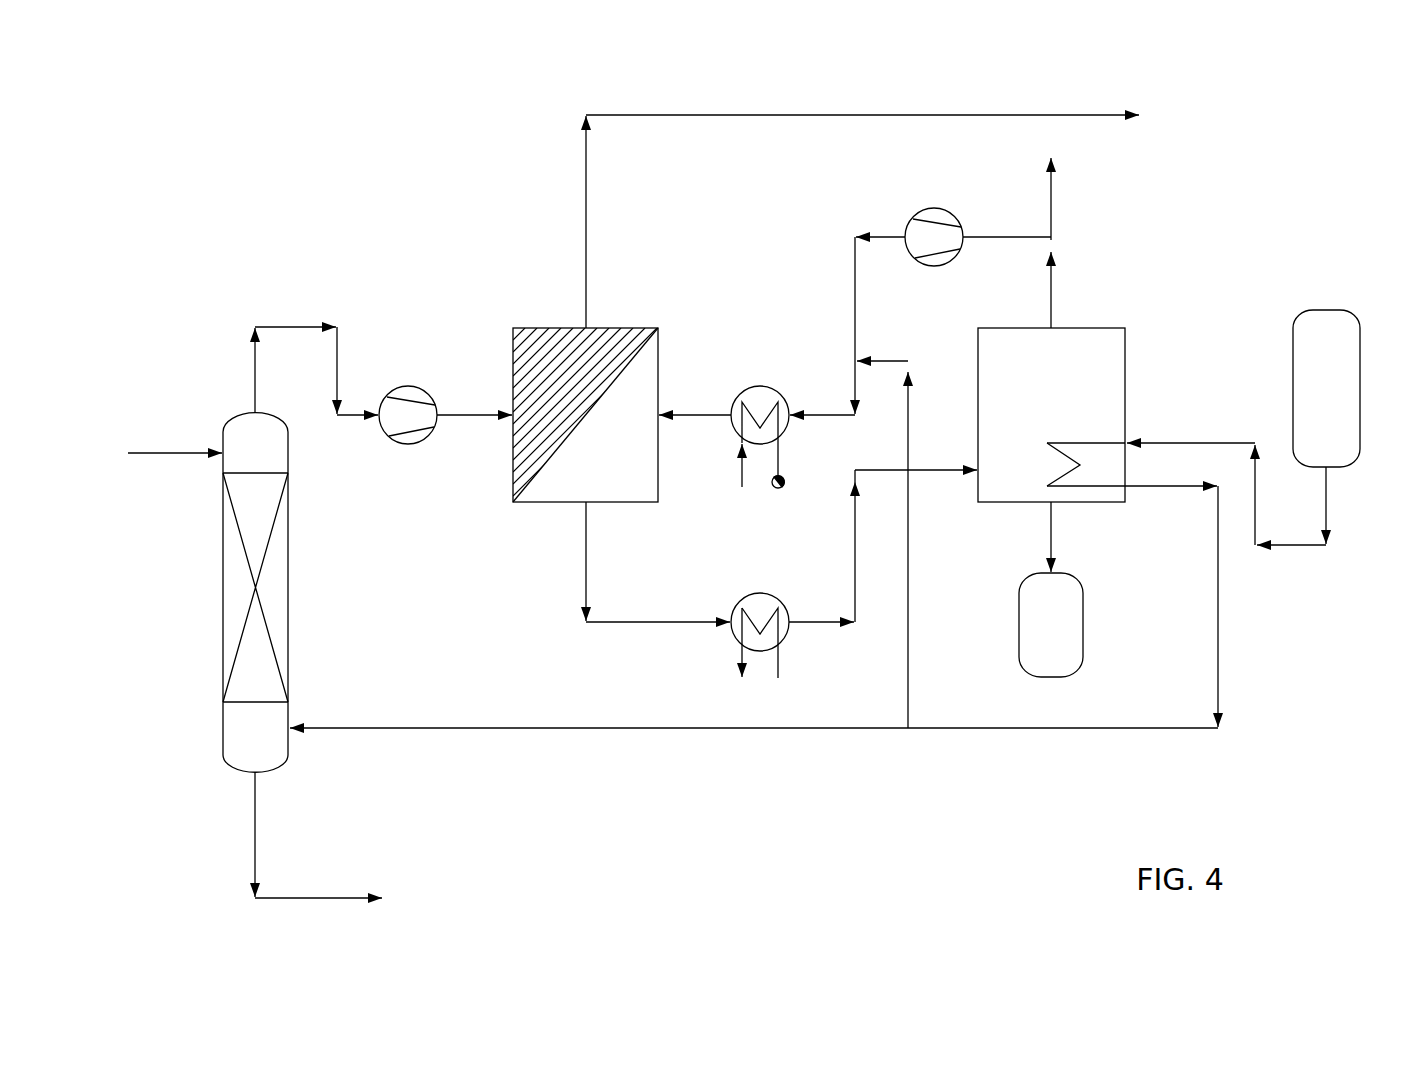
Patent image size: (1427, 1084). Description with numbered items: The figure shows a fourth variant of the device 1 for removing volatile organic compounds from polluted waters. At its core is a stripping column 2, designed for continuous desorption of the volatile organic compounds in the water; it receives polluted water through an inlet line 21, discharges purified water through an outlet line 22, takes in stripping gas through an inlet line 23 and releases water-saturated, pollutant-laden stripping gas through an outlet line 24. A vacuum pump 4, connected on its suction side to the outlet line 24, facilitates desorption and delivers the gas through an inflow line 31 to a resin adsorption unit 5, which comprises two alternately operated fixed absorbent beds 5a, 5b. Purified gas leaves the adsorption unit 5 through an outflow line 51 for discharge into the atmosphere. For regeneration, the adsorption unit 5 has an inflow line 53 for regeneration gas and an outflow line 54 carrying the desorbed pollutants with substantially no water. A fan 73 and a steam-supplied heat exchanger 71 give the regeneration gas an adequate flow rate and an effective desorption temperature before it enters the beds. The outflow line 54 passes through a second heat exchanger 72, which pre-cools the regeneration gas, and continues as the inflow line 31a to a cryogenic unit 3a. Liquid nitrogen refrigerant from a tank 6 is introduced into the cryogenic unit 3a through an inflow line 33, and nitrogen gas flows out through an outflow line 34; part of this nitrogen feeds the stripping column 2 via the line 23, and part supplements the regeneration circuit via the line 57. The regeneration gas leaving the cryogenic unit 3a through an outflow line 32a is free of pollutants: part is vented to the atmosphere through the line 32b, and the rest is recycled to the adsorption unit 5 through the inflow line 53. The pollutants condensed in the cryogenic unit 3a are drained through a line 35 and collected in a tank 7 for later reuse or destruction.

The device for removing volatile organic compounds from polluted waters 1 is at (140, 236).
The stripping column 2 is at (296, 540).
The inlet line for water to be purified 21 is at (175, 446).
The outlet line for purified water 22 is at (343, 890).
The inlet line for stripping gas 23 is at (343, 718).
The outlet line for stripping gas 24 is at (291, 318).
The vacuum pump 4 is at (409, 370).
The inflow line for gas to be purified 31 is at (470, 405).
The resin adsorption unit 5 is at (659, 327).
The fixed absorbent bed 5a is at (513, 328).
The fixed absorbent bed 5b is at (650, 485).
The outflow line for purified gas 51 is at (590, 177).
The inflow line for regeneration gas 53 is at (697, 420).
The outflow line for regeneration gas 54 is at (583, 553).
The heat exchanger 71 is at (759, 383).
The second heat exchanger 72 is at (759, 588).
The fan 73 is at (934, 200).
The inflow line for regeneration gas 31a is at (853, 556).
The line 57 is at (912, 570).
The cryogenic unit 3a is at (1130, 350).
The outflow line for regeneration gas 32a is at (1047, 303).
The line 32b is at (1047, 212).
The inflow line for refrigerant 33 is at (1178, 440).
The outflow line for nitrogen gas 34 is at (1178, 492).
The liquid pollutant drain line 35 is at (1047, 536).
The tank 6 is at (1365, 389).
The tank 7 is at (1016, 626).